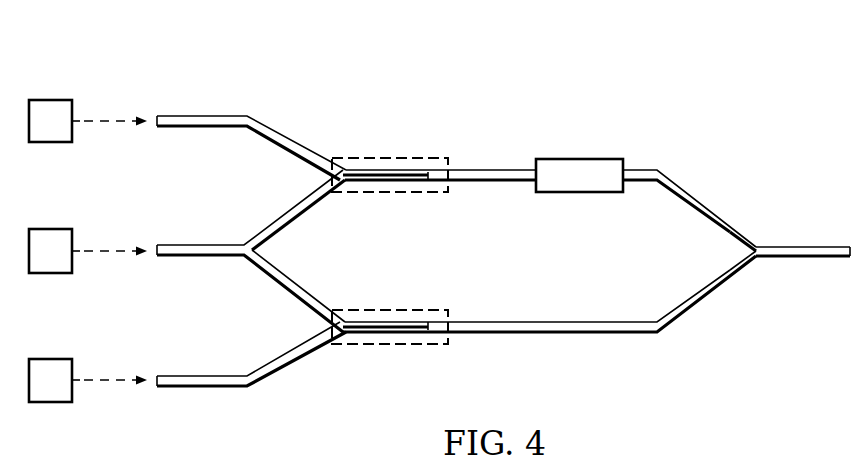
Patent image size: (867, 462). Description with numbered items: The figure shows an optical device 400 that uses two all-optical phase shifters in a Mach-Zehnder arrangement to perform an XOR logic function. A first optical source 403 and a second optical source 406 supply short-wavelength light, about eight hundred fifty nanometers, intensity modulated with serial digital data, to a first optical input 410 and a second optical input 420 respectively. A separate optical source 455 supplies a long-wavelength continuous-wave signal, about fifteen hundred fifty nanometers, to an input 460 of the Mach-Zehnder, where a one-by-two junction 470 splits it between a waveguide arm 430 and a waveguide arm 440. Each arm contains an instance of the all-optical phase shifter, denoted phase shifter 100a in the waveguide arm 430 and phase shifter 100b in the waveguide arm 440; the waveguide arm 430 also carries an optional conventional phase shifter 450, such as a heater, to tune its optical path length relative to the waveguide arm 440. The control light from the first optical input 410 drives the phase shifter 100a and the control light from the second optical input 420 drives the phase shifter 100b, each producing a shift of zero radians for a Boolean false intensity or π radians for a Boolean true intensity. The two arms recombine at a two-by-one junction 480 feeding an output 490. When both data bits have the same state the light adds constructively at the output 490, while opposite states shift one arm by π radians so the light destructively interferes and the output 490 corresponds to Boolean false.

The optical device 400 is at (724, 82).
The first optical source 403 is at (50, 100).
The optical source 455 is at (50, 229).
The second optical source 406 is at (50, 402).
The first optical input 410 is at (203, 116).
The input 460 is at (201, 245).
The second optical input 420 is at (203, 388).
The 1×2 junction 470 is at (246, 257).
The phase shifter 100a is at (390, 158).
The phase shifter 100b is at (390, 344).
The waveguide arm 430 is at (712, 206).
The waveguide arm 440 is at (718, 290).
The conventional phase shifter 450 is at (580, 159).
The 2×1 junction 480 is at (760, 258).
The output 490 is at (803, 247).